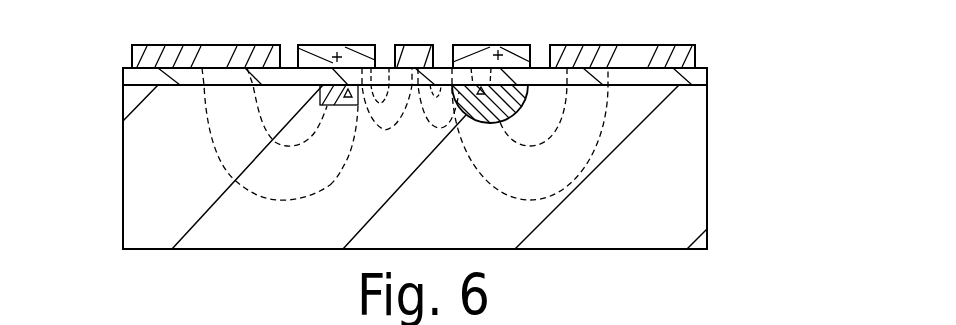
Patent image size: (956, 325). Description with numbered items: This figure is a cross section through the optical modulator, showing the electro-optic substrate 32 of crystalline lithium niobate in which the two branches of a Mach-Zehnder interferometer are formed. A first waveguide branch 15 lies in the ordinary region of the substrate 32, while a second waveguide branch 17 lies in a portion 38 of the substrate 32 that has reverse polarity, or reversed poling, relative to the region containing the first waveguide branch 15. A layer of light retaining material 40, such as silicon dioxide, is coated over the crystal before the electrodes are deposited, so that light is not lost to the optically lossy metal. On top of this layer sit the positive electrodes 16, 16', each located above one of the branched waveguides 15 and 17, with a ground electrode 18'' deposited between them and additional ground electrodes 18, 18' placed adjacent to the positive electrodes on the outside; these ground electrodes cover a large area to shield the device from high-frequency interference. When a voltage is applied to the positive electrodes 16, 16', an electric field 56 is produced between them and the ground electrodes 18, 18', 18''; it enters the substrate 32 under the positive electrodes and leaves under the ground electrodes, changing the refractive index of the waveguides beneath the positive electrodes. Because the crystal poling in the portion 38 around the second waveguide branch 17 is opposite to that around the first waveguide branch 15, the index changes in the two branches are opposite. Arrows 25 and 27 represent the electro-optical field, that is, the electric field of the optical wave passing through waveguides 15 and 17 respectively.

The first waveguide branch 15 is at (333, 106).
The positive electrode 16 is at (336, 46).
The positive electrode 16' is at (491, 46).
The second waveguide branch 17 is at (509, 111).
The ground electrode 18 is at (206, 46).
The ground electrode 18' is at (622, 46).
The ground electrode 18'' is at (428, 45).
The electro-optical field arrows 25 is at (356, 140).
The electro-optical field arrows 27 is at (438, 98).
The electro-optic substrate 32 is at (178, 175).
The reverse polarity portion 38 is at (491, 126).
The light retaining material layer 40 is at (123, 79).
The electric field 56 is at (311, 201).